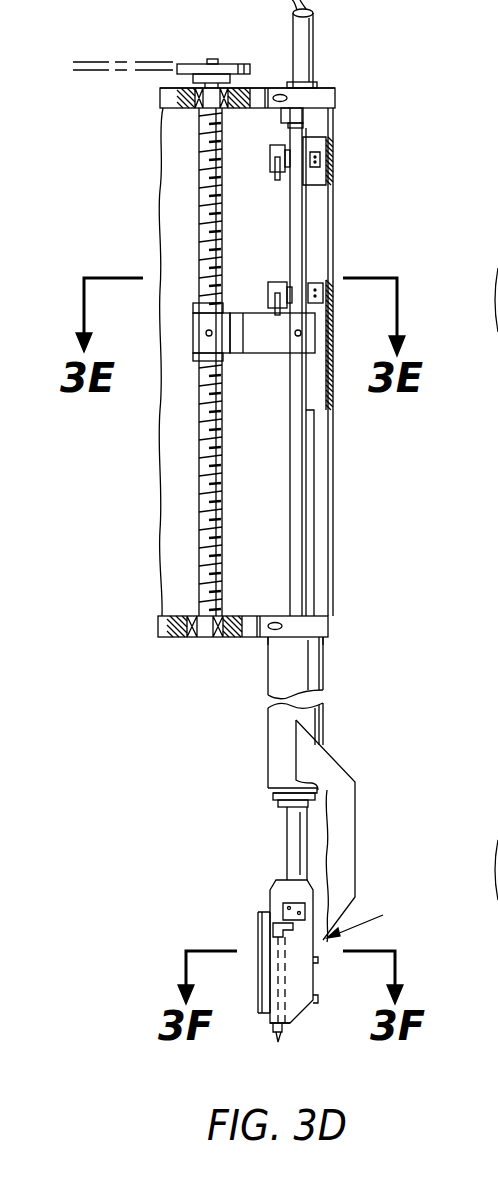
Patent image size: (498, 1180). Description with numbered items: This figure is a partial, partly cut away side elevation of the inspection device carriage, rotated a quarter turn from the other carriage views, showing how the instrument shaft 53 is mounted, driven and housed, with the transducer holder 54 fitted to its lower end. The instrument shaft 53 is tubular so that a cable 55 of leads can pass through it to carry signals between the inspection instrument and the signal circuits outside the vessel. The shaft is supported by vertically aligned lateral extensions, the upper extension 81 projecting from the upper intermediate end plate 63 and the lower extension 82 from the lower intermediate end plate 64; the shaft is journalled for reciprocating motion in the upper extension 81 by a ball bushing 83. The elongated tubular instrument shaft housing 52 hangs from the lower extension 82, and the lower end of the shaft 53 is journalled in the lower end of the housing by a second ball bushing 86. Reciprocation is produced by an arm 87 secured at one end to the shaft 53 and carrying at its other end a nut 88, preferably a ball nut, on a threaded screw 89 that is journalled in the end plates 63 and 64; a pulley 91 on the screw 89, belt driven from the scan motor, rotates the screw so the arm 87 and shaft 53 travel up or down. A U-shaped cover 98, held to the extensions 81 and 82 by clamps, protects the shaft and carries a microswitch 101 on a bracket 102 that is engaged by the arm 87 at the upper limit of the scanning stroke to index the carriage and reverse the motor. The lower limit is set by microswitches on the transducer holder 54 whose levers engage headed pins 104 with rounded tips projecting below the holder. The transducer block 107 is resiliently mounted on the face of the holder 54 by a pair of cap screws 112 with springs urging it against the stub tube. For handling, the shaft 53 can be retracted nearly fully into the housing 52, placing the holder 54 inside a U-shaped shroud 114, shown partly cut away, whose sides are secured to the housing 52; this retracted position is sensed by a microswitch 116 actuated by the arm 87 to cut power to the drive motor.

The instrument shaft housing 52 is at (323, 720).
The instrument shaft 53 is at (313, 58).
The transducer holder 54 is at (360, 921).
The cable 55 is at (317, 13).
The upper intermediate end plate 63 is at (167, 110).
The lower intermediate end plate 64 is at (180, 637).
The upper extension 81 is at (327, 87).
The lower extension 82 is at (328, 640).
The ball bushing 83 is at (287, 83).
The ball bushing 86 is at (273, 797).
The arm 87 is at (262, 353).
The nut 88 is at (192, 355).
The screw 89 is at (222, 246).
The pulley 91 is at (193, 64).
The U-shaped cover 98 is at (328, 478).
The microswitch 101 is at (280, 282).
The bracket 102 is at (315, 304).
The headed pin 104 is at (278, 1042).
The transducer block 107 is at (260, 922).
The cap screw 112 is at (318, 998).
The U-shaped shroud 114 is at (353, 773).
The microswitch 116 is at (280, 147).